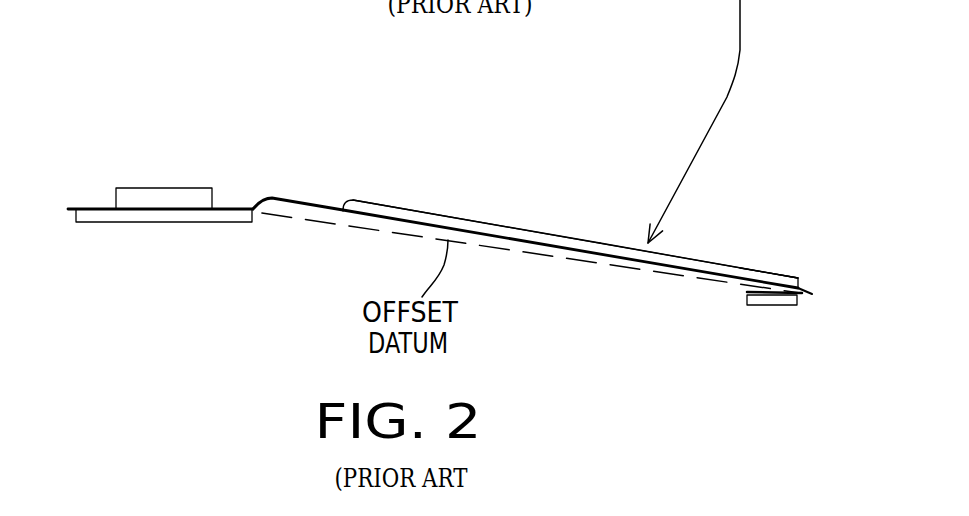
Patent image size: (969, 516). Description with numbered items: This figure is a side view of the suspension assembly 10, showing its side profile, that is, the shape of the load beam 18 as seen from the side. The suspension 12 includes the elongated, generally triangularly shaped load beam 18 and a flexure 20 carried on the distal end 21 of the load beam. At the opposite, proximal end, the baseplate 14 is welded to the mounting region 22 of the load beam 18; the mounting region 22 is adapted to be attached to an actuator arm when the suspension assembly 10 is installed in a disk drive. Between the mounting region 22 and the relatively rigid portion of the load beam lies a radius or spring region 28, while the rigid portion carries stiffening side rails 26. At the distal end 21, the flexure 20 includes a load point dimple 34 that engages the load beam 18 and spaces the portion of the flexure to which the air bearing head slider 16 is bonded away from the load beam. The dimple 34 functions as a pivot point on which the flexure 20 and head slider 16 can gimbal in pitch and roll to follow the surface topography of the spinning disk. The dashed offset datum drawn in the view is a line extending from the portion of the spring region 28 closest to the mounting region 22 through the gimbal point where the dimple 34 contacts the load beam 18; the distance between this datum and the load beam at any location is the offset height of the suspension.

The suspension assembly 10 is at (570, 182).
The suspension 12 is at (595, 242).
The baseplate 14 is at (163, 215).
The air bearing head slider 16 is at (787, 305).
The load beam 18 is at (698, 274).
The flexure 20 is at (805, 293).
The distal end 21 is at (767, 275).
The mounting region 22 is at (102, 207).
The stiffening side rails 26 is at (440, 215).
The spring region 28 is at (260, 202).
The load point dimple 34 is at (800, 292).